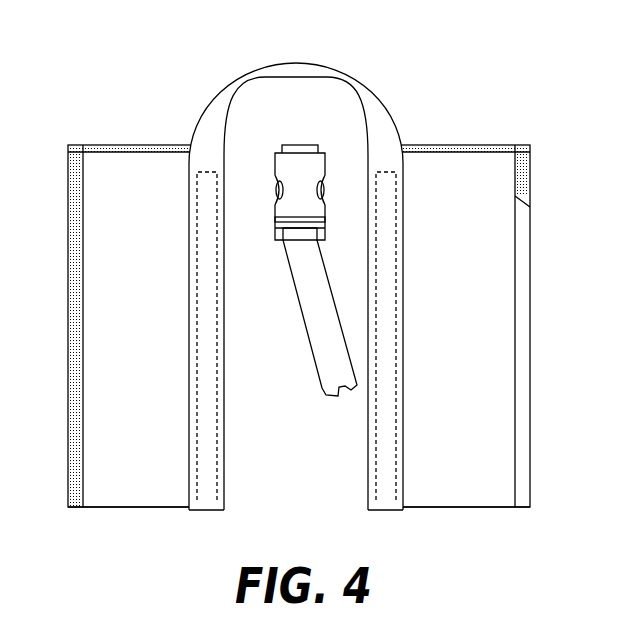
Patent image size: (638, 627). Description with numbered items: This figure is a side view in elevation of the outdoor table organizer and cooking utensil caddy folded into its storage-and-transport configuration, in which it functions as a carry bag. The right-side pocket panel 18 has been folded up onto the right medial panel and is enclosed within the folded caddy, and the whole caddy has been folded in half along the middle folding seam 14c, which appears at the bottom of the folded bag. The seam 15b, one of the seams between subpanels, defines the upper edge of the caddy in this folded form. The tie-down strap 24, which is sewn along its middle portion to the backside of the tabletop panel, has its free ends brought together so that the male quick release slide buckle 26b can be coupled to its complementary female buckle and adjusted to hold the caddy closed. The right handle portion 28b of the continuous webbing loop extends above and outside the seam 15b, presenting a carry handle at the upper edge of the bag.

The right handle portion 28b is at (297, 62).
The male quick release slide buckle 26b is at (291, 190).
The seam 15b is at (455, 147).
The right-side pocket panel 18 is at (492, 300).
The tie-down strap 24 is at (327, 344).
The middle folding seam 14c is at (138, 507).